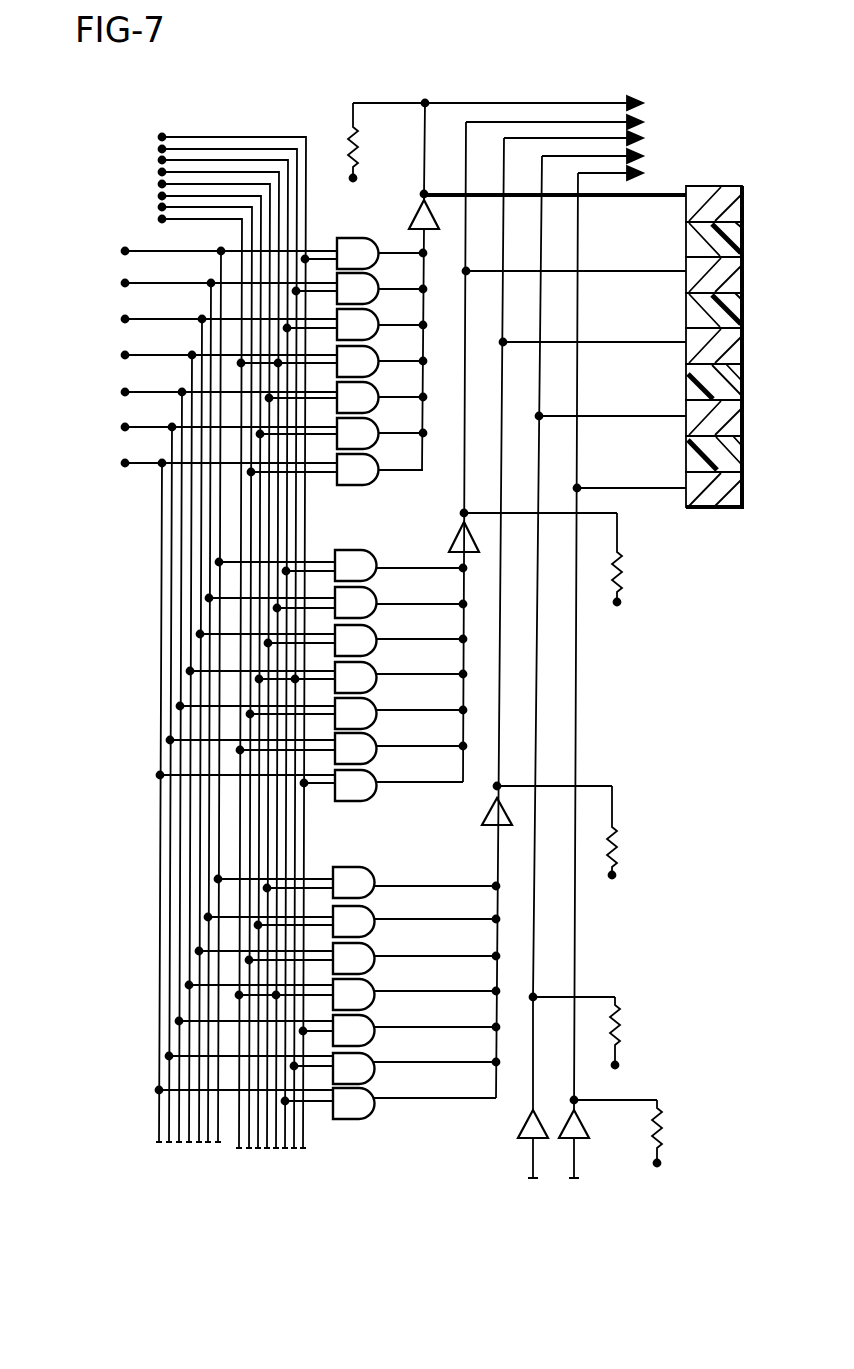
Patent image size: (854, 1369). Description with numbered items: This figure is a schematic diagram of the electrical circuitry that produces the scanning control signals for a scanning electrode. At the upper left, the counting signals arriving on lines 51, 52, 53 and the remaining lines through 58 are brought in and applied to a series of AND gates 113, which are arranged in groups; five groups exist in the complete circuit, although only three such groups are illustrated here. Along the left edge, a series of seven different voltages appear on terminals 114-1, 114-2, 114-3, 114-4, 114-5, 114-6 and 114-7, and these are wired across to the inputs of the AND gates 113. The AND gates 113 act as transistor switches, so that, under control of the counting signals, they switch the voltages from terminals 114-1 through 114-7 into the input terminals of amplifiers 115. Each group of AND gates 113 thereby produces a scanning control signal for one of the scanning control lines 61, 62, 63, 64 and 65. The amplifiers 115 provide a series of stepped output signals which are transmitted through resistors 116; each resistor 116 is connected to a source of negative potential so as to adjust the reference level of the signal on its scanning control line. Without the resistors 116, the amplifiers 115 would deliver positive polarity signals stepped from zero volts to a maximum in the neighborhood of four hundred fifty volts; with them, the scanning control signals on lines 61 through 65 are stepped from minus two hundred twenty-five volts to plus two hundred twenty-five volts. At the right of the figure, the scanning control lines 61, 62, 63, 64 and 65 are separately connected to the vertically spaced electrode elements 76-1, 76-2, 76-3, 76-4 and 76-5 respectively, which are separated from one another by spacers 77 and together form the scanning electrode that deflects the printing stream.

The counting signal line 51 is at (187, 136).
The counting signal line 52 is at (229, 148).
The counting signal line 53 is at (273, 160).
The counting signal line 58 is at (192, 219).
The scanning control line 61 is at (450, 102).
The scanning control line 62 is at (496, 121).
The scanning control line 63 is at (541, 137).
The scanning control line 64 is at (574, 155).
The scanning control line 65 is at (604, 172).
The electrode element 76-1 is at (734, 212).
The electrode element 76-2 is at (734, 281).
The electrode element 76-3 is at (734, 351).
The electrode element 76-4 is at (734, 424).
The electrode element 76-5 is at (734, 497).
The spacer 77 is at (694, 300).
The AND gate 113 is at (376, 258).
The terminal 114-1 is at (121, 251).
The terminal 114-2 is at (121, 283).
The terminal 114-3 is at (121, 319).
The terminal 114-4 is at (121, 355).
The terminal 114-5 is at (121, 392).
The terminal 114-6 is at (121, 427).
The terminal 114-7 is at (121, 463).
The amplifier 115 is at (418, 214).
The resistor 116 is at (358, 147).